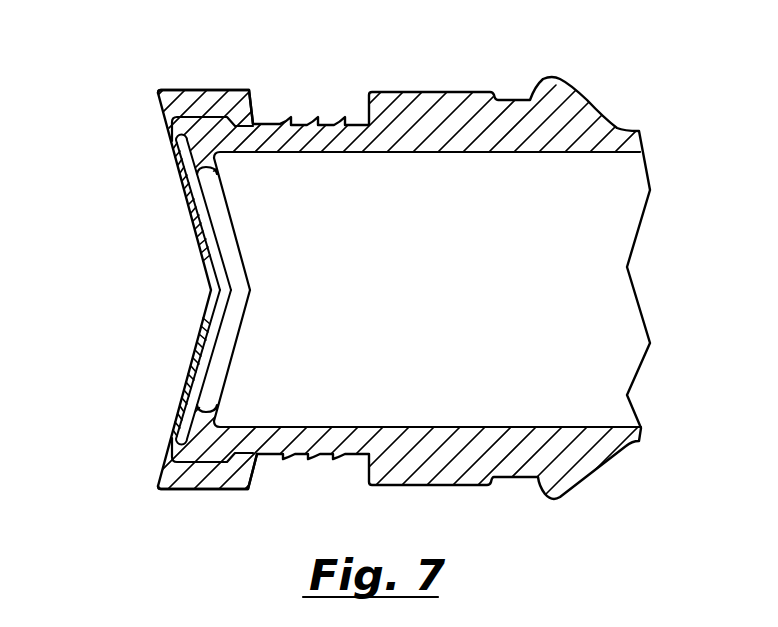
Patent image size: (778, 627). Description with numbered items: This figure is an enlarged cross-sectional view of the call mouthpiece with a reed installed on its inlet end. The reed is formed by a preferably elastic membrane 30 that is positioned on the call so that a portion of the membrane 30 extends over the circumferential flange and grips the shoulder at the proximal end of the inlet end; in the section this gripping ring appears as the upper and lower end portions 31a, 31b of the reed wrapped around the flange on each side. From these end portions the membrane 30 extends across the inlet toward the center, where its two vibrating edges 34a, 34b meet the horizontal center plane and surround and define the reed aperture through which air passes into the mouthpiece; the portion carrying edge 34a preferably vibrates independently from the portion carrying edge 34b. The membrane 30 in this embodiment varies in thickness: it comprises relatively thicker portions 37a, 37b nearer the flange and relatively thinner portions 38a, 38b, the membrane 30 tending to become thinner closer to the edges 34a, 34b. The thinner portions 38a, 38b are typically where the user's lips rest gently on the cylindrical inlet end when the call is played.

The membrane 30 is at (158, 170).
The upper flange portion 31a is at (215, 90).
The lower flange portion 31b is at (198, 483).
The vibrating edge 34a is at (206, 257).
The vibrating edge 34b is at (207, 325).
The thicker portion 37a is at (172, 153).
The thicker portion 37b is at (172, 426).
The thinner portion 38a is at (207, 254).
The thinner portion 38b is at (207, 334).